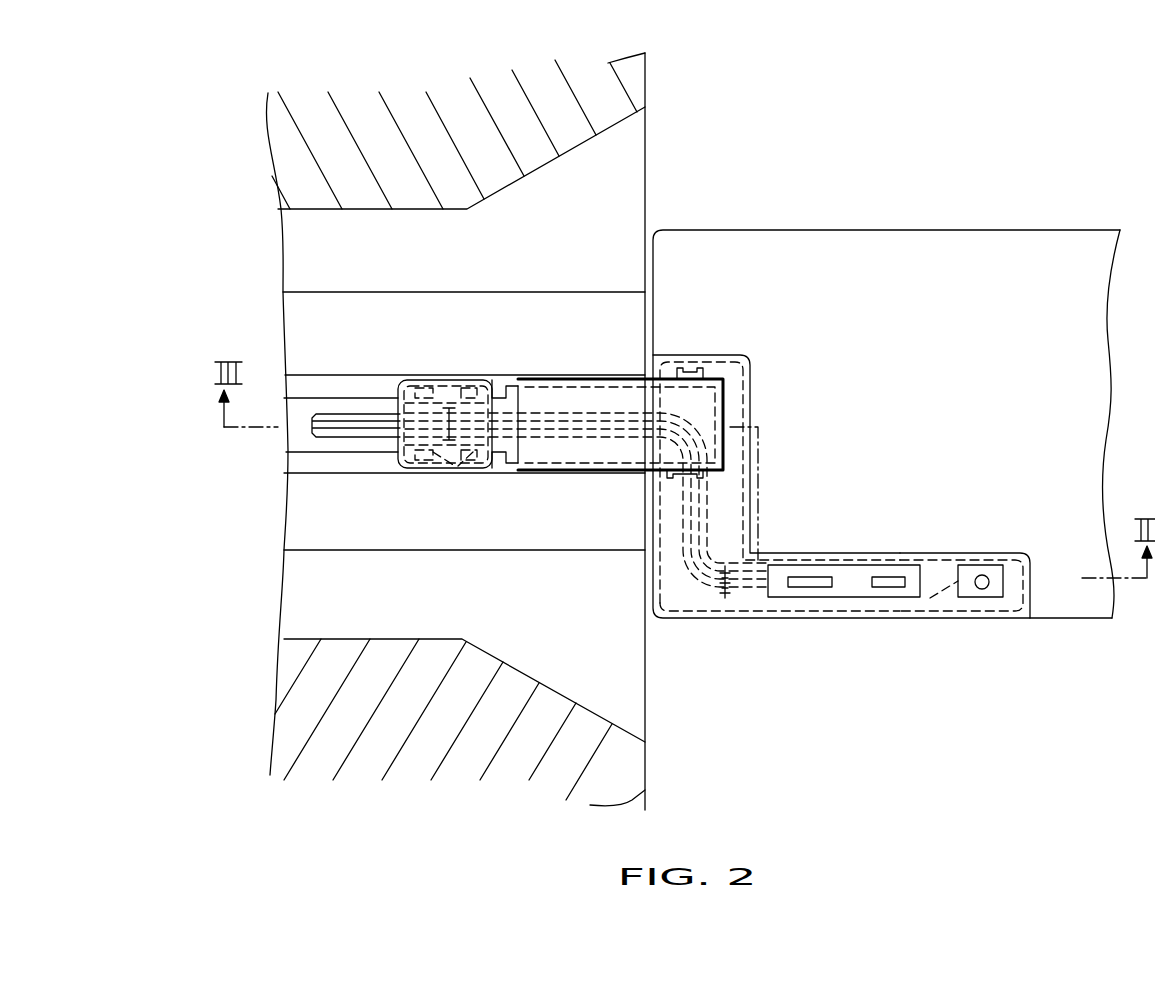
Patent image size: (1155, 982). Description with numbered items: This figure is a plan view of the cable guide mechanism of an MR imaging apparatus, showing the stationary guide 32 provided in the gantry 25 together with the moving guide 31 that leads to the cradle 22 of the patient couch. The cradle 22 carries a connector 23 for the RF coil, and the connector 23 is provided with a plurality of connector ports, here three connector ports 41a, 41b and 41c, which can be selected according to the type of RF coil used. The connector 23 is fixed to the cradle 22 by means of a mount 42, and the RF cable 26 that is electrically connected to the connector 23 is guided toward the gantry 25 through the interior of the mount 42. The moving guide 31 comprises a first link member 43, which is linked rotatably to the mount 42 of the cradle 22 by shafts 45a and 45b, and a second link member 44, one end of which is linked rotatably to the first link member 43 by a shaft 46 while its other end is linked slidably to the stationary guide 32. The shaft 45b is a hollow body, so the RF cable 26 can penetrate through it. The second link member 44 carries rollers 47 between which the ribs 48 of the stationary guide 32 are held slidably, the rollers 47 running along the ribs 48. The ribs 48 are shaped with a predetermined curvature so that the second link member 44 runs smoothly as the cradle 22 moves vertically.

The cradle 22 is at (972, 228).
The connector 23 is at (975, 462).
The gantry 25 is at (660, 105).
The RF cable 26 is at (334, 440).
The moving guide 31 is at (776, 396).
The stationary guide 32 is at (304, 368).
The connector port 41a is at (822, 573).
The connector port 41b is at (890, 573).
The connector port 41c is at (982, 576).
The mount 42 is at (1020, 553).
The first link member 43 is at (579, 400).
The second link member 44 is at (445, 386).
The shaft 45a is at (714, 362).
The shaft 45b is at (706, 480).
The shaft 46 is at (506, 385).
The rollers 47 is at (412, 392).
The ribs 48 is at (342, 388).